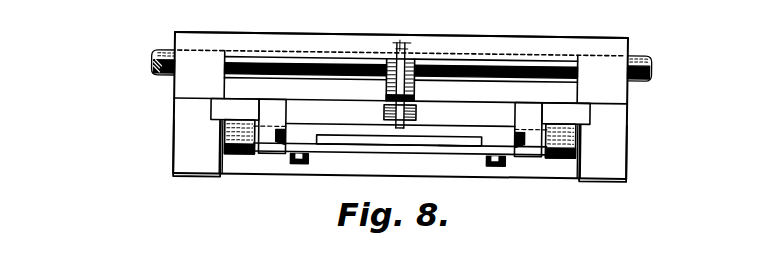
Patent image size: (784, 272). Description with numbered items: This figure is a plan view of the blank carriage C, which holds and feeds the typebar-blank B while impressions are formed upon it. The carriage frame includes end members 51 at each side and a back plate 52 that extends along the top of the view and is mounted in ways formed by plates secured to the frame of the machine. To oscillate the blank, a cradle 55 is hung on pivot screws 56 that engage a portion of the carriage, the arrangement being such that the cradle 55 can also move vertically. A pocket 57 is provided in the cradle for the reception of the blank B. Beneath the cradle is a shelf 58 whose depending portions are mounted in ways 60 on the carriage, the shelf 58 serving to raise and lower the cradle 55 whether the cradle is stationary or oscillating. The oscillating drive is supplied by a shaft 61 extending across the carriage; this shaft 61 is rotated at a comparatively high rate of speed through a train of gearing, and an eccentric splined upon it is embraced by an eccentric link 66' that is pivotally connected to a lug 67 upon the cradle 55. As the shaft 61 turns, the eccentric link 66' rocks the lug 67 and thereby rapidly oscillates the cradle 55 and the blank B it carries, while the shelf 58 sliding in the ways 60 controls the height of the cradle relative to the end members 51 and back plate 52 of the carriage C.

The end members 51 is at (400, 151).
The back plate 52 is at (610, 48).
The cradle 55 is at (242, 157).
The pivot screws 56 is at (220, 134).
The pocket 57 is at (319, 135).
The shelf 58 is at (532, 165).
The ways 60 is at (212, 110).
The shaft 61 is at (152, 54).
The eccentric link 66' is at (432, 84).
The lug 67 is at (396, 121).
The typebar-blank B is at (460, 142).
The carriage C is at (627, 146).